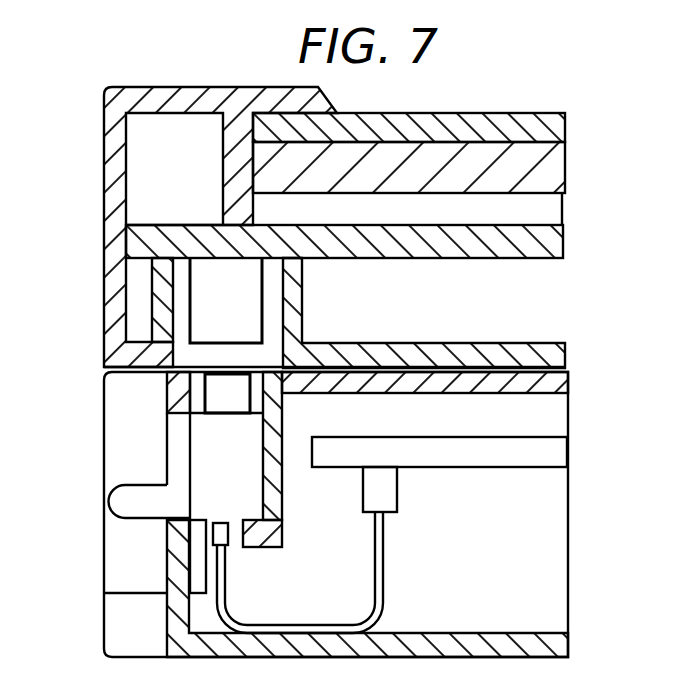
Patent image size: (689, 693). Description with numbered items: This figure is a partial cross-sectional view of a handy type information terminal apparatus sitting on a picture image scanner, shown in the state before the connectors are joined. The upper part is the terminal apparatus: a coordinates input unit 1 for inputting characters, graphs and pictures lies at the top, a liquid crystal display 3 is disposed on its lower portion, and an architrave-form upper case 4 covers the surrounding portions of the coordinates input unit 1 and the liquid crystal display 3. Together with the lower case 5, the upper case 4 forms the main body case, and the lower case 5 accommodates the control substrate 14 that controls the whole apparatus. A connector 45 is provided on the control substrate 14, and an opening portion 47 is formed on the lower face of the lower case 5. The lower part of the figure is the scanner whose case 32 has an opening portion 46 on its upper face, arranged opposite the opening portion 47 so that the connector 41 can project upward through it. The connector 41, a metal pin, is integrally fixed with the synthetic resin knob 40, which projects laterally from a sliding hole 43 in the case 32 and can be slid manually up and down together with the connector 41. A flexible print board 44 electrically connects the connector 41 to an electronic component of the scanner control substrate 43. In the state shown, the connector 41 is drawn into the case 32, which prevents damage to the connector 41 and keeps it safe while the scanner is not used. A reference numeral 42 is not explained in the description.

The coordinates input unit 1 is at (566, 117).
The liquid crystal display 3 is at (567, 172).
The upper case 4 is at (164, 90).
The lower case 5 is at (110, 243).
The control substrate 14 is at (564, 241).
The case 32 is at (483, 657).
The knob 40 is at (125, 513).
The connector 41 is at (215, 400).
The slot 42 is at (160, 465).
The sliding hole 43 is at (530, 470).
The flexible print board 44 is at (383, 588).
The connector 45 is at (172, 302).
The opening portion 46 is at (212, 367).
The opening portion 47 is at (167, 373).